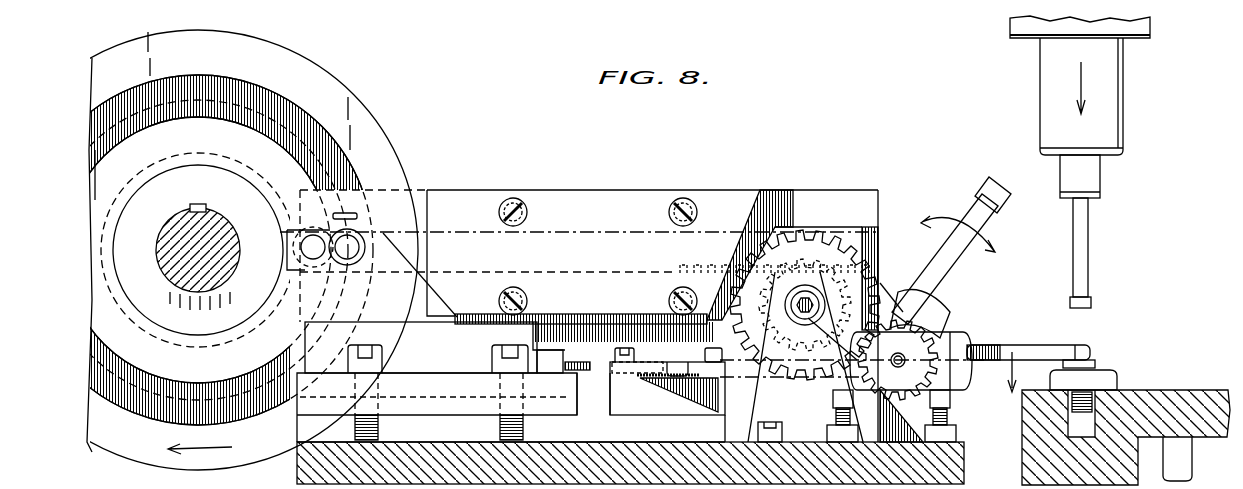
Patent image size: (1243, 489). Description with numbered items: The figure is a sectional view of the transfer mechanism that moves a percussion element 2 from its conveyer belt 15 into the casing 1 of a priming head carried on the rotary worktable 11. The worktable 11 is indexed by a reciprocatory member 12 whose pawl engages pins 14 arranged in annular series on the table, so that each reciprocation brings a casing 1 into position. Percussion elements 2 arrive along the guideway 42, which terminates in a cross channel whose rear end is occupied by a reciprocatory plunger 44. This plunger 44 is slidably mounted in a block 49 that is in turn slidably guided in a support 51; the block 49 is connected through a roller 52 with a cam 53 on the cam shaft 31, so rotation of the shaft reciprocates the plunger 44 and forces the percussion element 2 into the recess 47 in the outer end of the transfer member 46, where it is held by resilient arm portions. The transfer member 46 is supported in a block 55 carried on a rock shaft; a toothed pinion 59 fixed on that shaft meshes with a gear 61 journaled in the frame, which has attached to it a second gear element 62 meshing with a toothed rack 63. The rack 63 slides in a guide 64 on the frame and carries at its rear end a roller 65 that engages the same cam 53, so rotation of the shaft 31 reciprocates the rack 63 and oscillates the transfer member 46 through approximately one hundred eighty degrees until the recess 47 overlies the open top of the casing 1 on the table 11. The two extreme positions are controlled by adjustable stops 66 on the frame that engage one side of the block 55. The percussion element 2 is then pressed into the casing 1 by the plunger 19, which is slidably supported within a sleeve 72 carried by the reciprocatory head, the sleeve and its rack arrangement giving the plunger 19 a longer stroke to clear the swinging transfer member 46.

The casing 1 is at (1094, 368).
The percussion element 2 is at (680, 362).
The rotary worktable 11 is at (1212, 392).
The reciprocatory member 12 is at (803, 322).
The pins 14 is at (1185, 462).
The endless conveyer belt 15 is at (662, 380).
The plunger 19 is at (1085, 232).
The cam shaft 31 is at (190, 223).
The guideway 42 is at (670, 318).
The reciprocatory plunger 44 is at (584, 364).
The transfer member 46 is at (773, 383).
The recess 47 is at (745, 333).
The block 49 is at (445, 356).
The support 51 is at (313, 425).
The roller 52 is at (360, 237).
The cam 53 is at (347, 87).
The block 55 is at (910, 387).
The toothed pinion 59 is at (968, 372).
The gear 61 is at (792, 258).
The second gear element 62 is at (882, 282).
The toothed rack 63 is at (300, 285).
The guide 64 is at (880, 244).
The roller 65 is at (310, 225).
The adjustable stops 66 is at (834, 398).
The sleeve 72 is at (1025, 36).